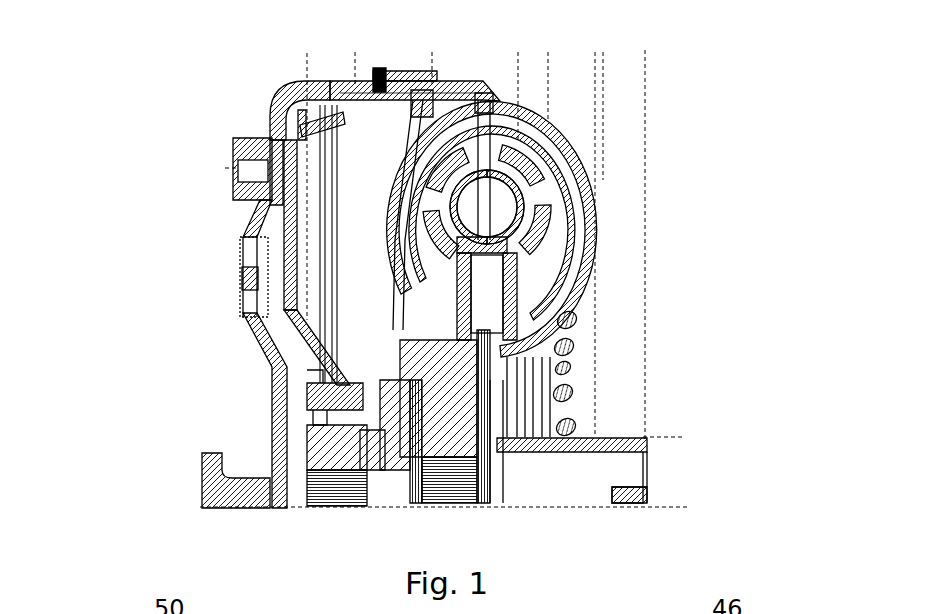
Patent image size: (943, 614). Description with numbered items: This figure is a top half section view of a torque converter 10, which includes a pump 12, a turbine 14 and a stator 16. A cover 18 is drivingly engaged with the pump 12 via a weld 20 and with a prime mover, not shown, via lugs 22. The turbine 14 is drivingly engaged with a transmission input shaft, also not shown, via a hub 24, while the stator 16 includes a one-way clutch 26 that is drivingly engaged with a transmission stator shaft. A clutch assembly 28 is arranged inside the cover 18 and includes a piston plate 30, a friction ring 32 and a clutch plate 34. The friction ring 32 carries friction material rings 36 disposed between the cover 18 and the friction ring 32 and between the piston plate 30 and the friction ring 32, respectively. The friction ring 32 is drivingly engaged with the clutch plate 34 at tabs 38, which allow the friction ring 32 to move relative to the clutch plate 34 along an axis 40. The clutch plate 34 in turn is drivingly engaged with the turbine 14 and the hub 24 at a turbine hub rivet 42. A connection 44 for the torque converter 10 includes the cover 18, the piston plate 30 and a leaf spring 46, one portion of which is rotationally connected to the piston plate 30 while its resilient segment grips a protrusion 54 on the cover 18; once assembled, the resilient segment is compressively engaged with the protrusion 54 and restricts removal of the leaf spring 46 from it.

The torque converter 10 is at (705, 137).
The pump 12 is at (575, 133).
The turbine 14 is at (485, 100).
The stator 16 is at (525, 385).
The cover 18 is at (243, 318).
The weld 20 is at (383, 70).
The lugs 22 is at (247, 136).
The hub 24 is at (385, 470).
The one-way clutch 26 is at (507, 500).
The clutch assembly 28 is at (352, 160).
The piston plate 30 is at (290, 335).
The friction ring 32 is at (278, 112).
The clutch plate 34 is at (330, 365).
The friction material rings 36 is at (279, 110).
The tabs 38 is at (306, 90).
The axis 40 is at (650, 490).
The turbine hub rivet 42 is at (205, 452).
The connection 44 is at (197, 295).
The leaf spring 46 is at (262, 225).
The protrusion 54 is at (268, 262).